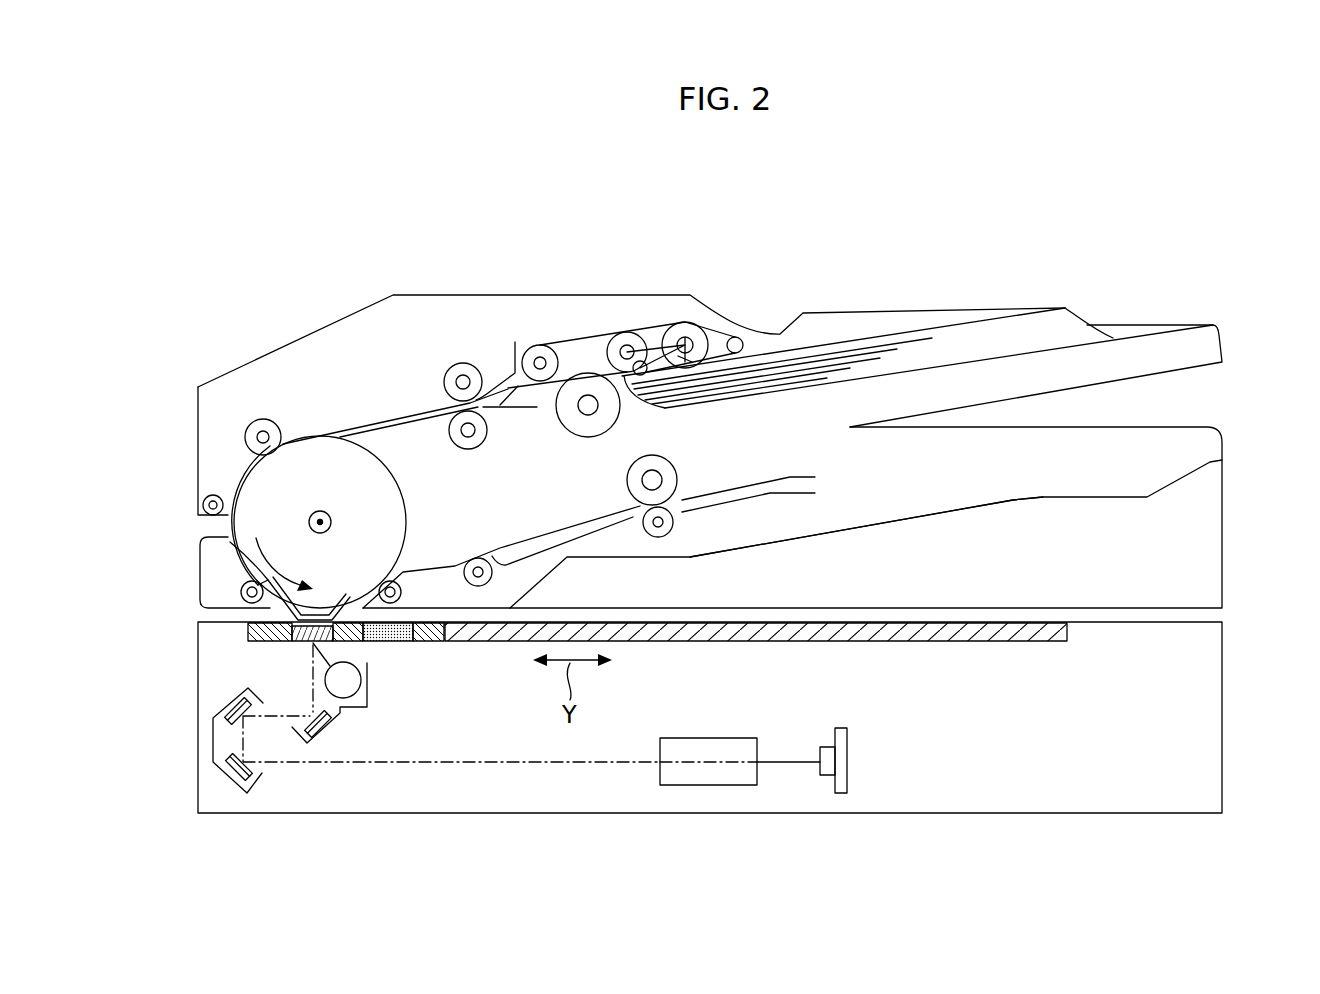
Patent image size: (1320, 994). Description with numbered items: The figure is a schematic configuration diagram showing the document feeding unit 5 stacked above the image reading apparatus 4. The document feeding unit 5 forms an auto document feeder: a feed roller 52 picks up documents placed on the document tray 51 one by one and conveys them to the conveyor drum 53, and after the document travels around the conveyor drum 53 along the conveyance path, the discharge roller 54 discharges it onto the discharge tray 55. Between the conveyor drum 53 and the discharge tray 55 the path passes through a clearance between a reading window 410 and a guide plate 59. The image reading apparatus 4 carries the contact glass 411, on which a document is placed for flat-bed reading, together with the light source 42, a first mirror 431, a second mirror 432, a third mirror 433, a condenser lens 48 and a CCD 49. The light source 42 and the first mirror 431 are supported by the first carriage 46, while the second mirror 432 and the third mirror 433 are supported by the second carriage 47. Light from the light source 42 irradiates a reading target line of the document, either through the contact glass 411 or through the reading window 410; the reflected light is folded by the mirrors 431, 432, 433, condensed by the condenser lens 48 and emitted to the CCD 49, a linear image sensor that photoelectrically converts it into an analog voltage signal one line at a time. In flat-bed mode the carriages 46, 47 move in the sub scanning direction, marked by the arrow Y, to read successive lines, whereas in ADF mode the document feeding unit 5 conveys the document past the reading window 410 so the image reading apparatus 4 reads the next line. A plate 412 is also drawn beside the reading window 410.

The image reading apparatus 4 is at (1222, 663).
The document feeding unit 5 is at (1222, 563).
The light source 42 is at (345, 688).
The first carriage 46 is at (368, 680).
The second carriage 47 is at (257, 793).
The condenser lens 48 is at (693, 786).
The CCD 49 is at (826, 776).
The document tray 51 is at (955, 363).
The feed roller 52 is at (695, 324).
The conveyor drum 53 is at (260, 492).
The discharge roller 54 is at (672, 526).
The discharge tray 55 is at (1013, 500).
The guide plate 59 is at (318, 612).
The reading window 410 is at (305, 637).
The contact glass 411 is at (685, 643).
The white reference plate 412 is at (397, 641).
The first mirror 431 is at (330, 732).
The second mirror 432 is at (229, 706).
The third mirror 433 is at (223, 773).